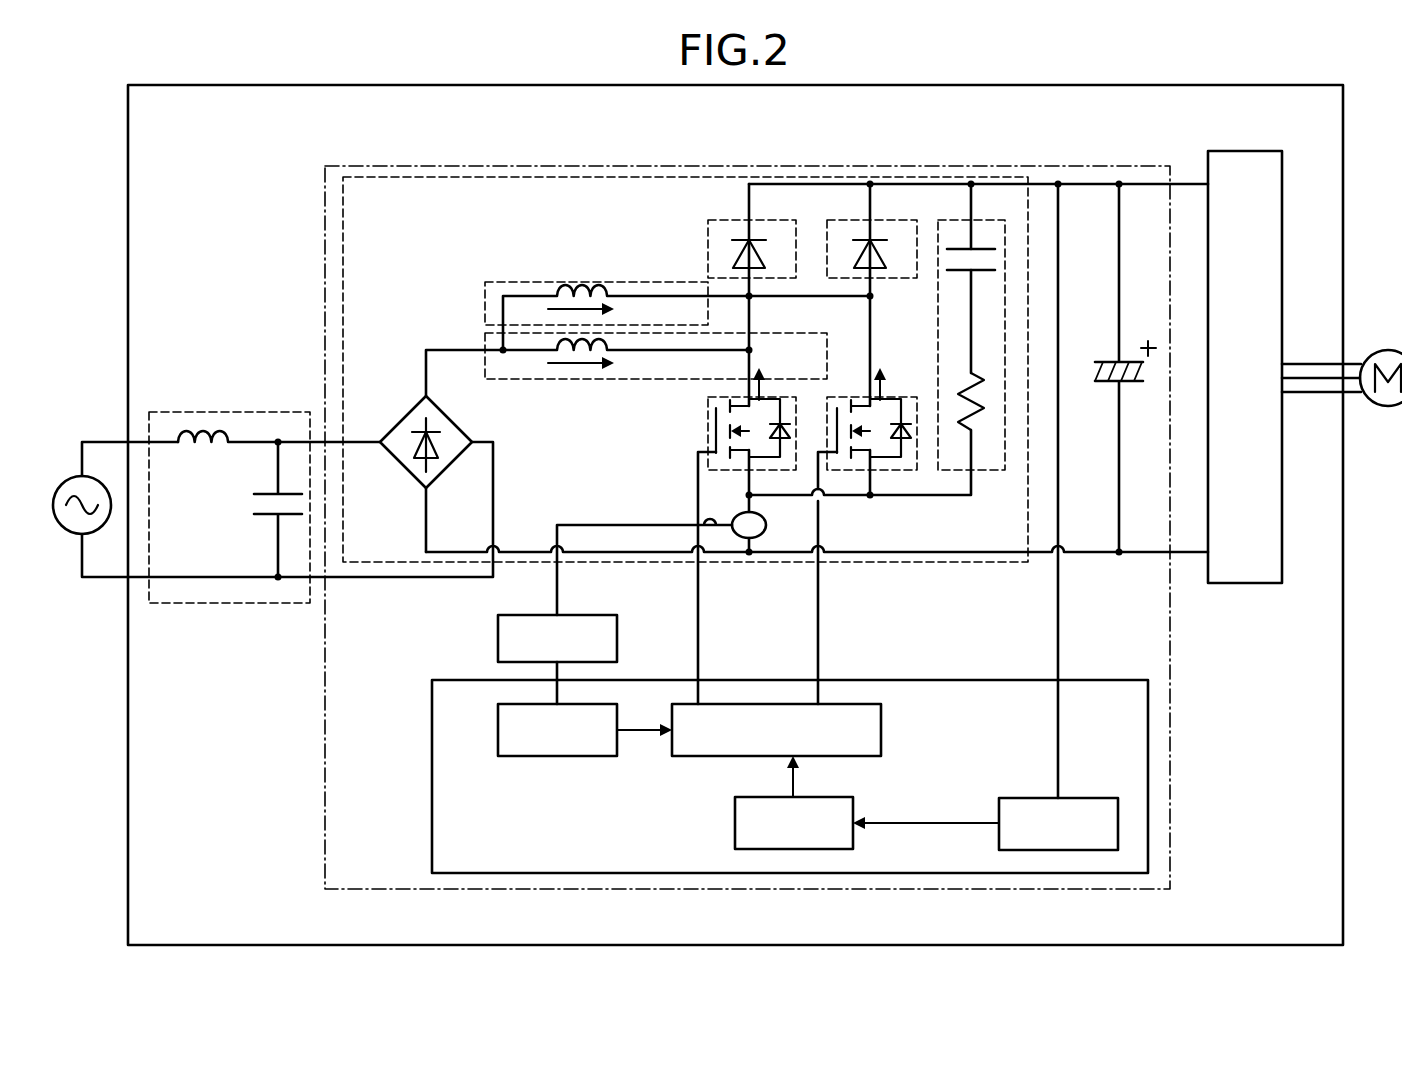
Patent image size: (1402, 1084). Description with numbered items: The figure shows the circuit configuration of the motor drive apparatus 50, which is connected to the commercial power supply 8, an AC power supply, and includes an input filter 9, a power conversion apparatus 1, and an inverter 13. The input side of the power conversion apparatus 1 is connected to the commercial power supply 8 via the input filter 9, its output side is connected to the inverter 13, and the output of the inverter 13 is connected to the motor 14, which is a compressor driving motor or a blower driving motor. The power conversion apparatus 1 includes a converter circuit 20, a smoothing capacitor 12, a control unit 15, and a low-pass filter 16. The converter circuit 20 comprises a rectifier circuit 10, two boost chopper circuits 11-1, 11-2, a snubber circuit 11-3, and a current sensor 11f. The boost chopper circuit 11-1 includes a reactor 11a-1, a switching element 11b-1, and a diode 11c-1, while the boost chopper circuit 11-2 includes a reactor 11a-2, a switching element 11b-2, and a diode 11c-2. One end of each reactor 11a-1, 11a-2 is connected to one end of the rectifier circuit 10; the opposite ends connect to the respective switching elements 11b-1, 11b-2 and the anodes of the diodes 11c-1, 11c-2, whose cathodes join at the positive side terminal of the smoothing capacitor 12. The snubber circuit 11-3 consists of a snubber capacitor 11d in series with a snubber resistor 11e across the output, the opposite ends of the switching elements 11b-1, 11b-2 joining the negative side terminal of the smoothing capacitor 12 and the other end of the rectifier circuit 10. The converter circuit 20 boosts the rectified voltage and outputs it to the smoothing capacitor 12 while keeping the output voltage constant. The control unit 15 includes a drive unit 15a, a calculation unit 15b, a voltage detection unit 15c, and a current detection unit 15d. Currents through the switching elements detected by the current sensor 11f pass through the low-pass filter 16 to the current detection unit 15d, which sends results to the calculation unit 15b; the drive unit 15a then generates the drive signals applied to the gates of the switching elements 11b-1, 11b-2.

The motor drive apparatus 50 is at (1343, 112).
The power conversion apparatus 1 is at (325, 178).
The converter circuit 20 is at (343, 222).
The commercial power supply 8 is at (78, 476).
The input filter 9 is at (176, 412).
The rectifier circuit 10 is at (404, 419).
The boost chopper circuit 11-1 is at (735, 220).
The boost chopper circuit 11-2 is at (893, 220).
The snubber circuit 11-3 is at (958, 220).
The reactor 11a-1 is at (558, 343).
The reactor 11a-2 is at (598, 285).
The switching element 11b-1 is at (769, 462).
The switching element 11b-2 is at (884, 462).
The diode 11c-1 is at (733, 255).
The diode 11c-2 is at (855, 255).
The snubber capacitor 11d is at (982, 248).
The snubber resistor 11e is at (983, 430).
The current sensor 11f is at (735, 519).
The smoothing capacitor 12 is at (1105, 362).
The inverter 13 is at (1282, 180).
The motor 14 is at (1388, 350).
The control unit 15 is at (790, 783).
The drive unit 15a is at (720, 756).
The calculation unit 15b is at (795, 849).
The voltage detection unit 15c is at (1058, 850).
The current detection unit 15d is at (557, 756).
The low-pass filter 16 is at (498, 640).